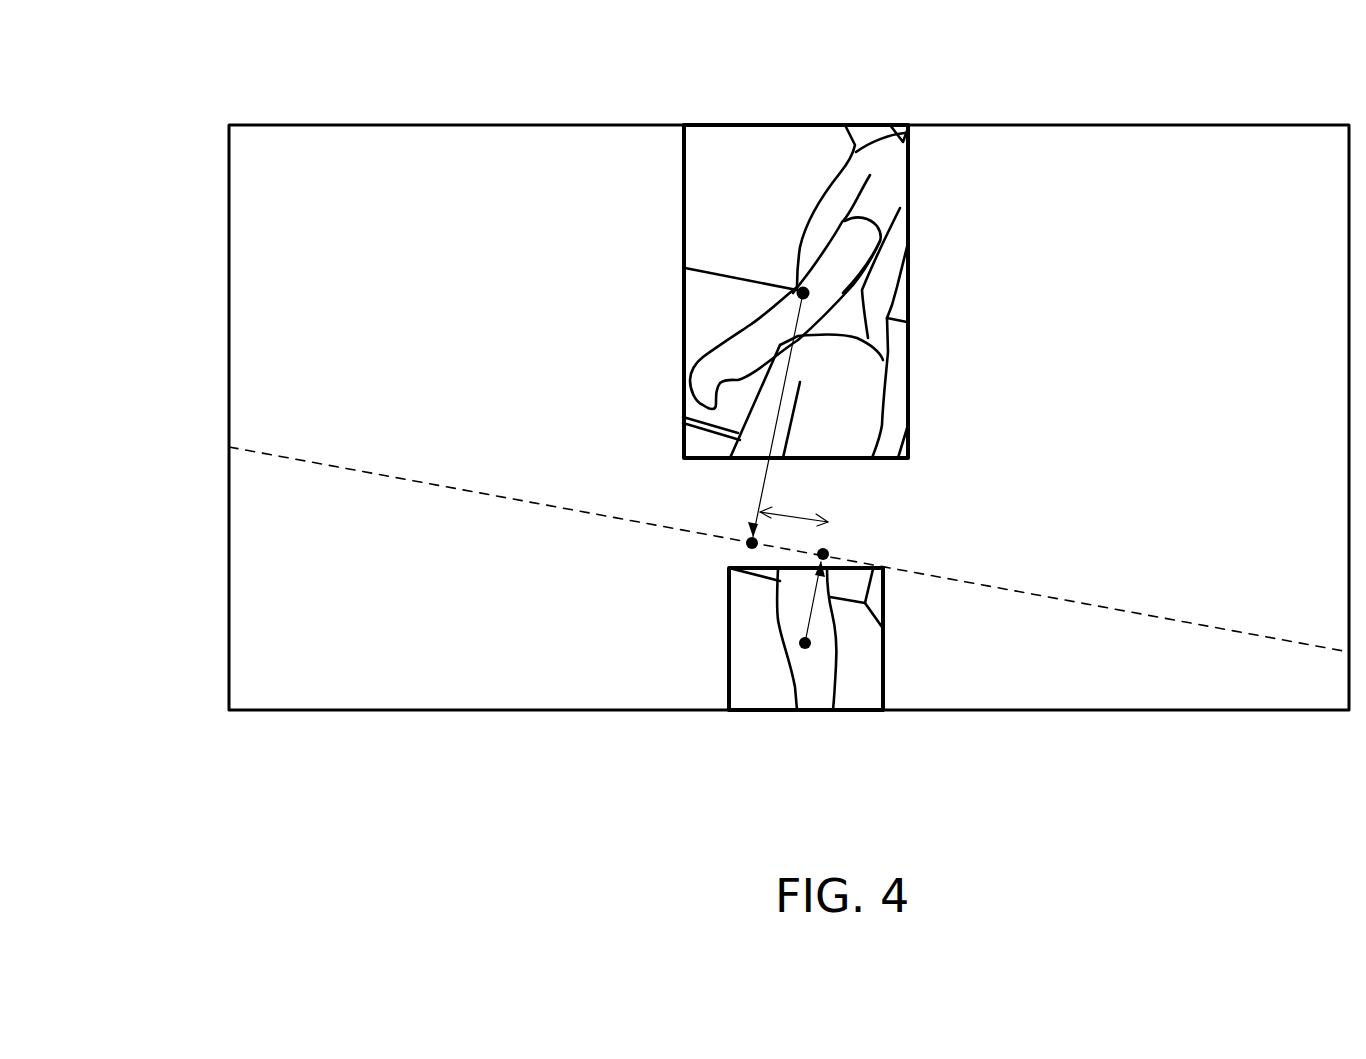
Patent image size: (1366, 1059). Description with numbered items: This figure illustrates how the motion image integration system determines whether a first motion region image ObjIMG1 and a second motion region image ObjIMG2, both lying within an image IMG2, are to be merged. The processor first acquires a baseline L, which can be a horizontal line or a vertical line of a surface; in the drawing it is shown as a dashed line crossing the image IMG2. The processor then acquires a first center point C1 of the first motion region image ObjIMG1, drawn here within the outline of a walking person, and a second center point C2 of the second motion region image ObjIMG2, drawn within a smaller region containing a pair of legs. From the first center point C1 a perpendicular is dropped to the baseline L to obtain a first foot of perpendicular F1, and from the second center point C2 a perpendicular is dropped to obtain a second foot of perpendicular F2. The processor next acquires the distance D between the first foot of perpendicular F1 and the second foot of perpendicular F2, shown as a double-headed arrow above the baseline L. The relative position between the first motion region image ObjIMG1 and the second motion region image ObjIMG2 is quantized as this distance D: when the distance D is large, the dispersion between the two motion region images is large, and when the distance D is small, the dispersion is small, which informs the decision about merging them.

The second image IMG2 is at (282, 123).
The first motion region image ObjIMG1 is at (751, 147).
The second motion region image ObjIMG2 is at (727, 677).
The first center point C1 is at (796, 289).
The second center point C2 is at (802, 645).
The first foot of perpendicular F1 is at (750, 543).
The second foot of perpendicular F2 is at (828, 553).
The baseline L is at (262, 450).
The distance D is at (794, 503).